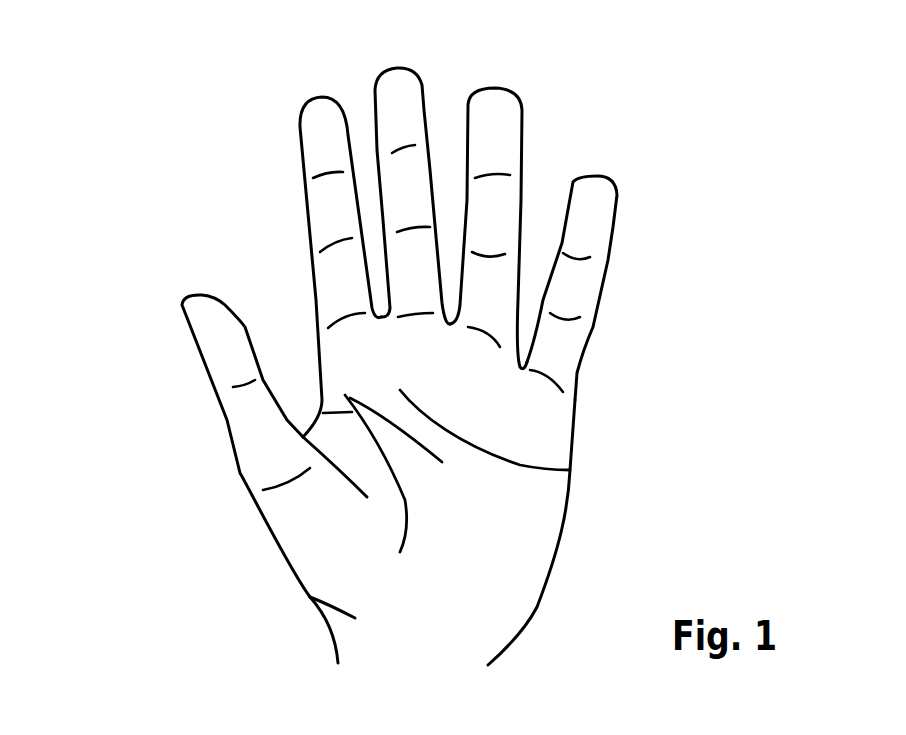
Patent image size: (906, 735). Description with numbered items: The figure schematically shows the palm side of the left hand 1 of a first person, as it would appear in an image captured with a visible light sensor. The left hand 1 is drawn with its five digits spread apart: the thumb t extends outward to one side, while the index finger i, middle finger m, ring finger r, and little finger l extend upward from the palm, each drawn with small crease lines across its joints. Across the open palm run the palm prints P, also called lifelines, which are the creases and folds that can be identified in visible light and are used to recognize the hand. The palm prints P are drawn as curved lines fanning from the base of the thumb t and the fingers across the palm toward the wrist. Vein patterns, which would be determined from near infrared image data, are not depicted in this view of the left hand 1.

The left hand 1 is at (330, 336).
The index finger i is at (293, 91).
The middle finger m is at (368, 60).
The ring finger r is at (504, 61).
The little finger l is at (593, 148).
The thumb t is at (156, 289).
The palm prints P is at (341, 367).